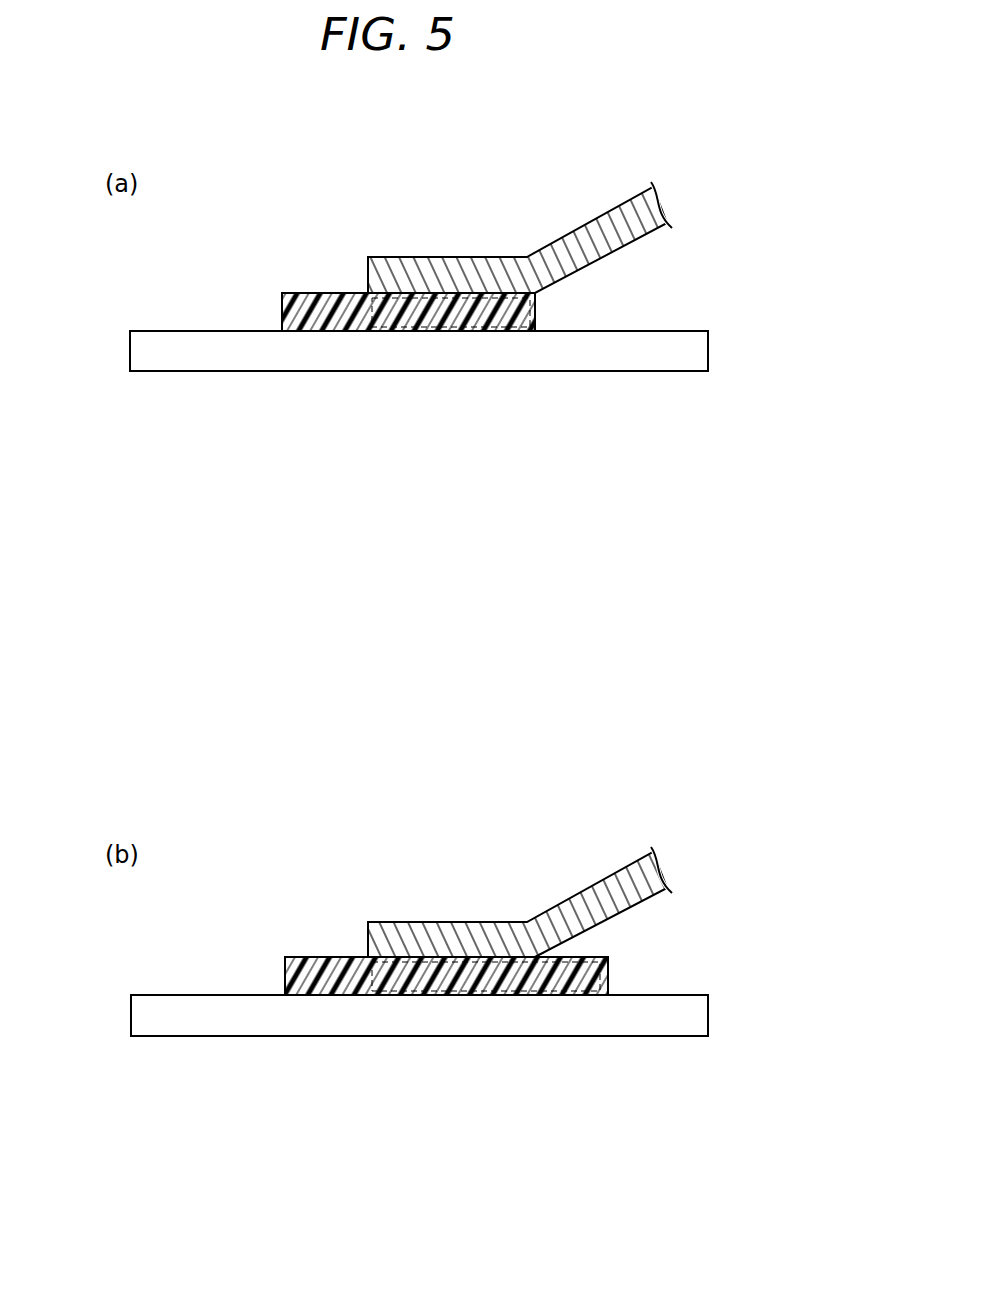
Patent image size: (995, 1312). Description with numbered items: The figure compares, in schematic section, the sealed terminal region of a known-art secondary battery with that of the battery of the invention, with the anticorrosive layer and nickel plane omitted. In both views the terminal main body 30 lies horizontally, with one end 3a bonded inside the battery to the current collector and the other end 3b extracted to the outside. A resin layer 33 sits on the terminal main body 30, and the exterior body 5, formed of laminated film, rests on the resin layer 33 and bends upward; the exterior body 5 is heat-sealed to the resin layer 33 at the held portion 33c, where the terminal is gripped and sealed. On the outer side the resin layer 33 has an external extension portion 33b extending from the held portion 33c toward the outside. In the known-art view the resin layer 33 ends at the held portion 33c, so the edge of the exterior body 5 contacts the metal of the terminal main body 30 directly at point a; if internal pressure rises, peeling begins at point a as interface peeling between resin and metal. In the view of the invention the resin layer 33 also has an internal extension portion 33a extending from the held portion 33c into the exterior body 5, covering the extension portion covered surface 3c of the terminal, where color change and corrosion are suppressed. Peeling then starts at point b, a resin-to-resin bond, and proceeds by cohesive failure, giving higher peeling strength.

The terminal main body 30 is at (217, 378).
The end 3a is at (675, 352).
The other end 3b is at (150, 351).
The extension portion covered surface 3c is at (556, 997).
The resin layer 33 is at (325, 300).
The internal extension portion 33a is at (598, 985).
The external extension portion 33b is at (288, 292).
The held portion 33c is at (452, 292).
The exterior body 5 is at (623, 217).
The point a is at (540, 313).
The point b is at (540, 952).